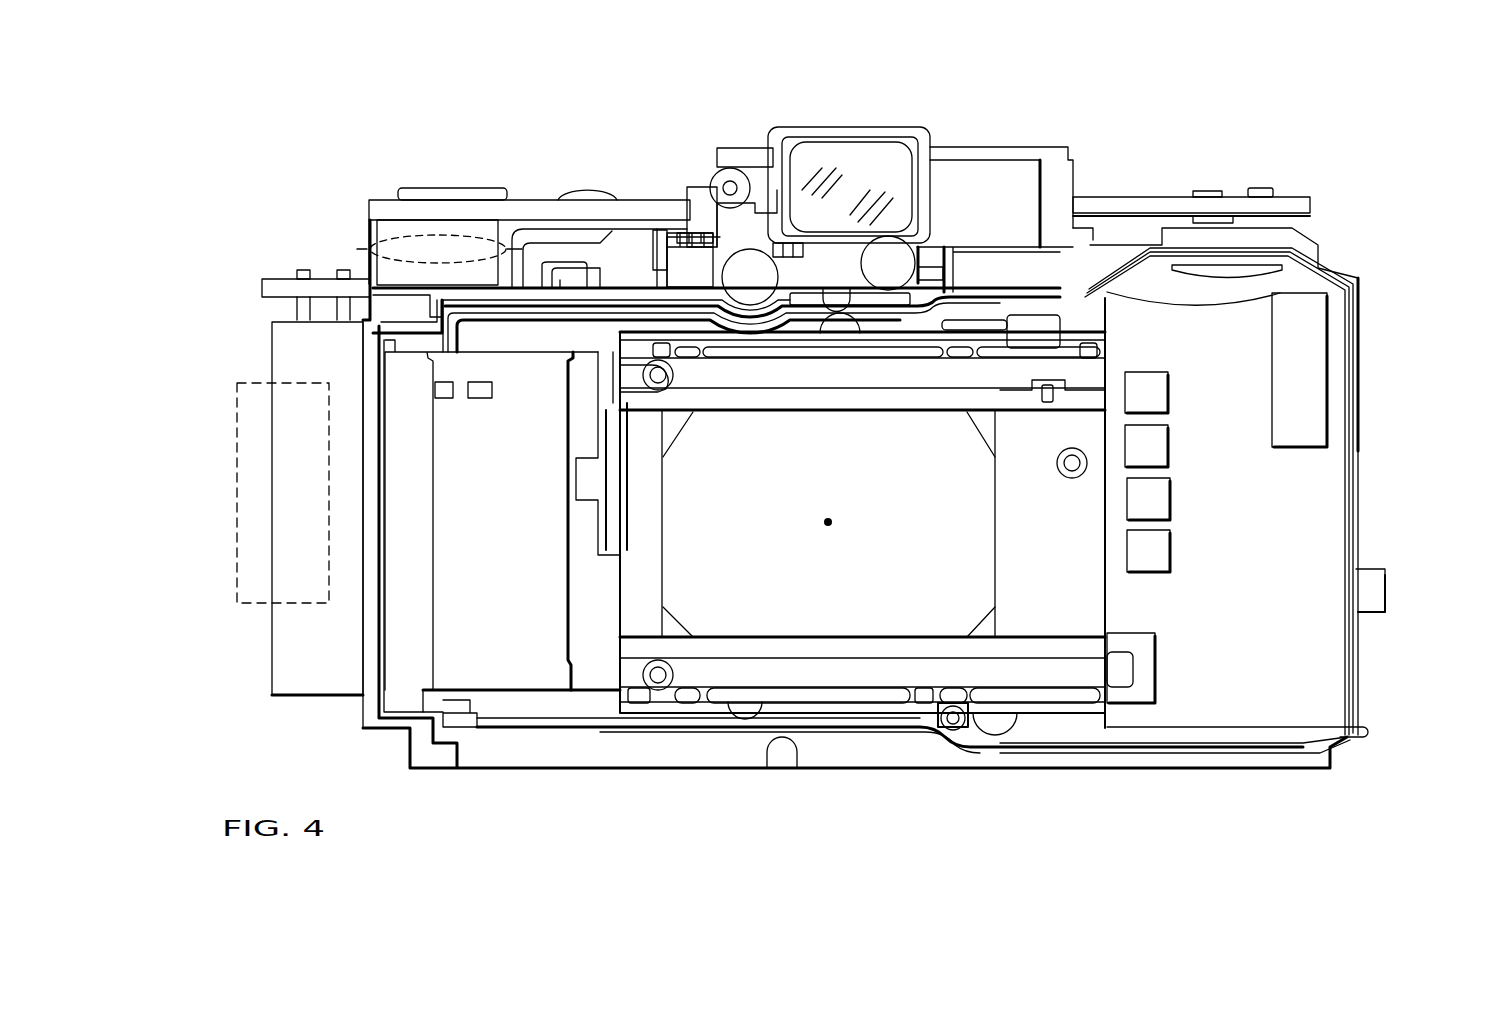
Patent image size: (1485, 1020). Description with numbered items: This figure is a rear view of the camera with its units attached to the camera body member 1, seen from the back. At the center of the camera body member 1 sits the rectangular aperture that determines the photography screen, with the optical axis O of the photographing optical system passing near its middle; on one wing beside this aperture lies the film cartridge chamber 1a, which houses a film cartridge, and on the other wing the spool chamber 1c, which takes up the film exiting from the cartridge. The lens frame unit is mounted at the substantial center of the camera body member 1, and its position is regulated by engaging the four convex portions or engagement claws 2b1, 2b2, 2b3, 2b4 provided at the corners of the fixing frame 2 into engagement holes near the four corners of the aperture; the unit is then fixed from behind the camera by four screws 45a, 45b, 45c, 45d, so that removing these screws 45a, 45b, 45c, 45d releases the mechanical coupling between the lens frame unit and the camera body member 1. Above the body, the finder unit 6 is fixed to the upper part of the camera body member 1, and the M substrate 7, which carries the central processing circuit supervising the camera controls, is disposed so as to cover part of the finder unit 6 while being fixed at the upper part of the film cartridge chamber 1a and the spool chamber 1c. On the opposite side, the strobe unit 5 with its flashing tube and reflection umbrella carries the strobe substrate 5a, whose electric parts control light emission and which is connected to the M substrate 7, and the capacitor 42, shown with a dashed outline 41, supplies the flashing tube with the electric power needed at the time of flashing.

The camera body member 1 is at (1385, 451).
The film cartridge chamber 1a is at (1250, 352).
The spool chamber 1c is at (405, 672).
The fixing frame 2 is at (982, 632).
The engagement claw 2b1 is at (960, 354).
The engagement claw 2b2 is at (958, 688).
The engagement claw 2b3 is at (690, 688).
The engagement claw 2b4 is at (690, 354).
The strobe unit 5 is at (342, 226).
The strobe substrate 5a is at (278, 283).
The finder unit 6 is at (950, 140).
The M substrate 7 is at (1157, 212).
The battery (phantom) 41 is at (251, 413).
The capacitor 42 is at (292, 657).
The screw 45a is at (660, 388).
The screw 45b is at (658, 690).
The screw 45c is at (1060, 462).
The screw 45d is at (953, 730).
The optical axis O is at (833, 518).